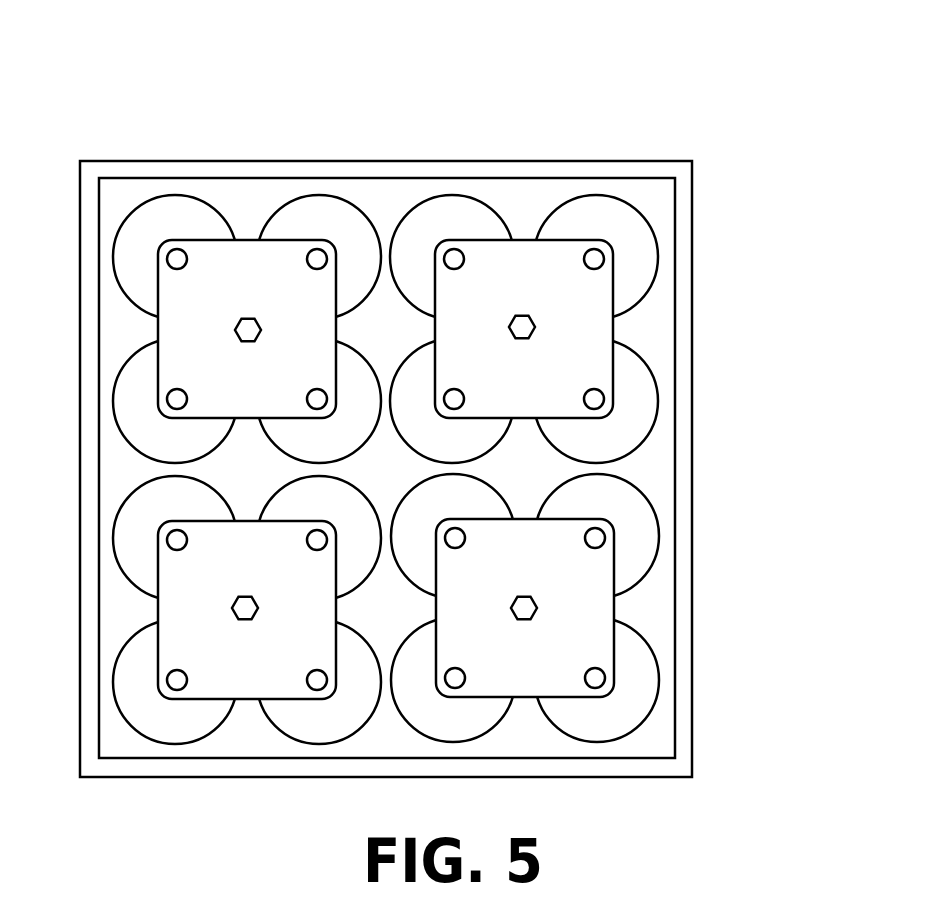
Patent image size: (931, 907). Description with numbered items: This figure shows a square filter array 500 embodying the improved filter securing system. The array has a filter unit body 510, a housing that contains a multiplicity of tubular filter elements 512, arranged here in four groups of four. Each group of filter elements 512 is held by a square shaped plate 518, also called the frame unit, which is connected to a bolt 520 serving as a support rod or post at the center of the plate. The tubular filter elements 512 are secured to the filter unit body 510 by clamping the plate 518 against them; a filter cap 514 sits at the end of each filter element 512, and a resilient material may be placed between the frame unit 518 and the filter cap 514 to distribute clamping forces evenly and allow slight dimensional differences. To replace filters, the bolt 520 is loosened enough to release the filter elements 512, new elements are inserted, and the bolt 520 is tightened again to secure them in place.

The square filter array 500 is at (540, 68).
The filter unit body 510 is at (386, 430).
The tubular filter elements 512 is at (650, 291).
The filter cap 514 is at (648, 372).
The square shaped plate 518 is at (275, 390).
The bolt 520 is at (532, 315).